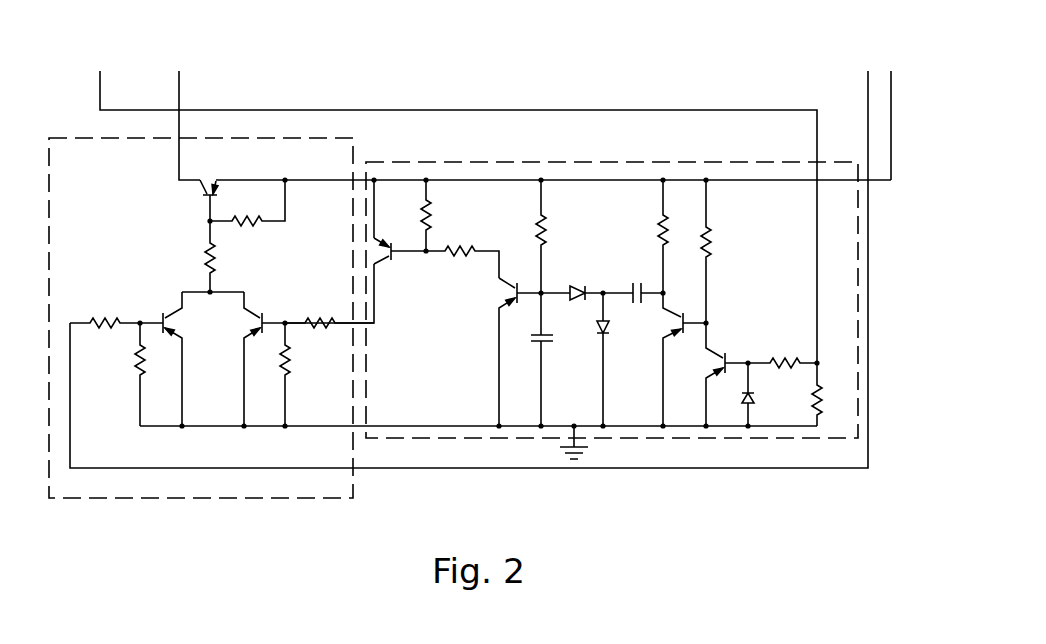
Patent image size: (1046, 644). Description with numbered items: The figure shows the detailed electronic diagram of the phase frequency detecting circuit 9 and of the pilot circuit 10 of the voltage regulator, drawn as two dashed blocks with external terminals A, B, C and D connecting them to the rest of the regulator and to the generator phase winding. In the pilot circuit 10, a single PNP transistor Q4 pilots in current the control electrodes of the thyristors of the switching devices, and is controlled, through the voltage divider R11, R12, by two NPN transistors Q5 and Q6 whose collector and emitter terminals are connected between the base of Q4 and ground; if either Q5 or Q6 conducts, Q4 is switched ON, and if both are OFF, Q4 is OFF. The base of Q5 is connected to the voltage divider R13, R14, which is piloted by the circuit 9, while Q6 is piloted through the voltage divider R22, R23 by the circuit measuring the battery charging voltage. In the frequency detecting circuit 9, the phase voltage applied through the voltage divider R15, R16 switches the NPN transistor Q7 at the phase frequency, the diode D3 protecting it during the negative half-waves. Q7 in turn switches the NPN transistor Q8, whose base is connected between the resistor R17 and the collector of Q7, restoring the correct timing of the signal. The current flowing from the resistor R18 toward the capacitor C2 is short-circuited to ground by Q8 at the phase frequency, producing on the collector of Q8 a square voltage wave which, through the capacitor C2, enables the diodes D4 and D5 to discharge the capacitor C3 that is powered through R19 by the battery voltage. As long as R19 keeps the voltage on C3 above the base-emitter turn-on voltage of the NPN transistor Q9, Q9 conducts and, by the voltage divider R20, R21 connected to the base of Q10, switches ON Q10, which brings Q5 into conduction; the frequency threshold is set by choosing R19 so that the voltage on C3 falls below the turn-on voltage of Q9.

The terminal A is at (455, 203).
The terminal B is at (186, 111).
The terminal C is at (472, 255).
The terminal D is at (891, 111).
The pilot circuit 10 is at (201, 318).
The phase frequency detecting circuit 9 is at (612, 300).
The PNP transistor Q4 is at (210, 189).
The voltage divider resistor R11 is at (247, 203).
The voltage divider resistor R12 is at (229, 256).
The NPN transistor Q6 is at (184, 359).
The NPN transistor Q5 is at (240, 359).
The voltage divider resistor R23 is at (116, 312).
The voltage divider resistor R22 is at (121, 374).
The voltage divider resistor R13 is at (318, 312).
The voltage divider resistor R14 is at (303, 374).
The transistor Q10 is at (400, 262).
The voltage divider resistor R21 is at (445, 215).
The voltage divider resistor R20 is at (462, 264).
The NPN transistor Q9 is at (506, 352).
The resistor R19 is at (561, 236).
The capacitor C3 is at (554, 359).
The diode D4 is at (572, 280).
The diode D5 is at (617, 359).
The capacitor C2 is at (633, 281).
The resistor R18 is at (646, 236).
The resistor R17 is at (724, 251).
The NPN transistor Q8 is at (673, 359).
The NPN transistor Q7 is at (714, 374).
The voltage divider resistor R15 is at (782, 352).
The diode D3 is at (763, 394).
The voltage divider resistor R16 is at (834, 394).